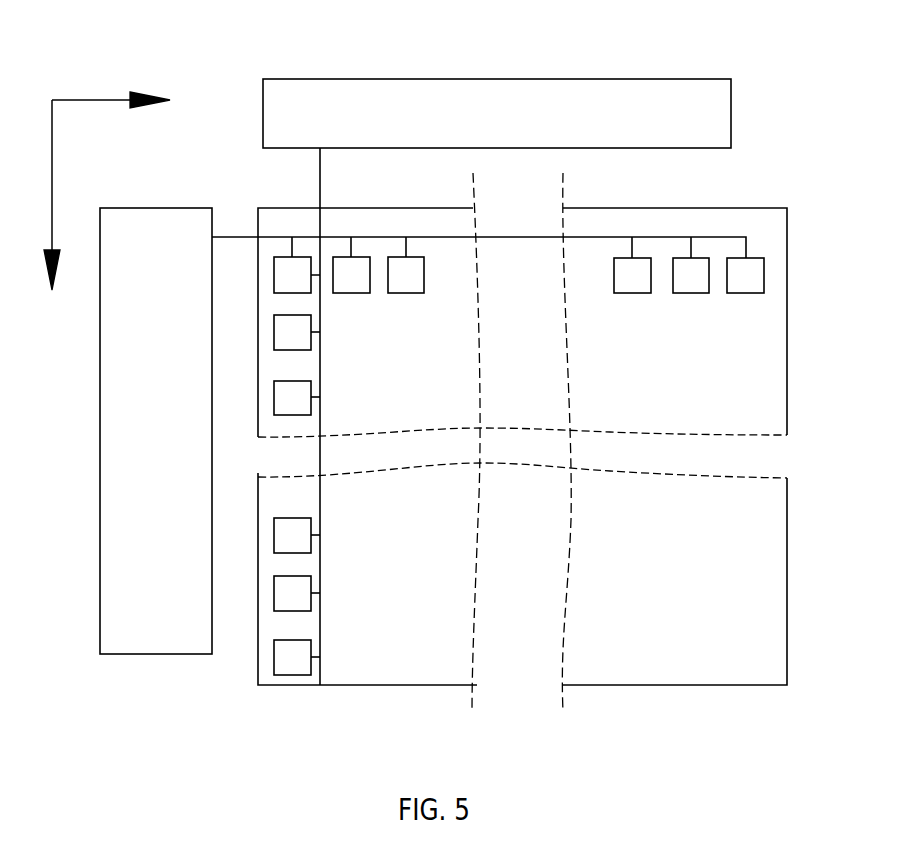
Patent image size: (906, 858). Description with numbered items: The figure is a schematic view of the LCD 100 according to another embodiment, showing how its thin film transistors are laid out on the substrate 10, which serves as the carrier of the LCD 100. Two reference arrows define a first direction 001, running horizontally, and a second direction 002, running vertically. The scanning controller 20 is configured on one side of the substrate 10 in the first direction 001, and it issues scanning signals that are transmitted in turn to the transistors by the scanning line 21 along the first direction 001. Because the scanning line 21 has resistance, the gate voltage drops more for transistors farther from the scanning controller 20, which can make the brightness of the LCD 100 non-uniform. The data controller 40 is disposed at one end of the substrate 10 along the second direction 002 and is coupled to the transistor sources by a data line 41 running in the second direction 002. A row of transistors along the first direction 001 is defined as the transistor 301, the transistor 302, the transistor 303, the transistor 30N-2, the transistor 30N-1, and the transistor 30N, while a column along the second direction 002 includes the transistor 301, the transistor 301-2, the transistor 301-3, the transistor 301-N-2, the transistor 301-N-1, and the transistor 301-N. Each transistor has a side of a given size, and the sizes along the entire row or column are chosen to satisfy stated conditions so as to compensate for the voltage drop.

The LCD 100 is at (130, 692).
The substrate 10 is at (643, 655).
The scanning controller 20 is at (145, 542).
The scanning line 21 is at (237, 237).
The data controller 40 is at (550, 103).
The data line 41 is at (318, 182).
The transistor 301 is at (292, 270).
The transistor 301-2 is at (292, 330).
The transistor 301-3 is at (292, 392).
The transistor 301-N-2 is at (300, 535).
The transistor 301-N-1 is at (295, 597).
The transistor 301-N is at (295, 655).
The transistor 302 is at (360, 280).
The transistor 303 is at (400, 263).
The transistor 30N-2 is at (637, 267).
The transistor 30N-1 is at (688, 275).
The transistor 30N is at (745, 275).
The first direction 001 is at (111, 83).
The second direction 002 is at (55, 218).